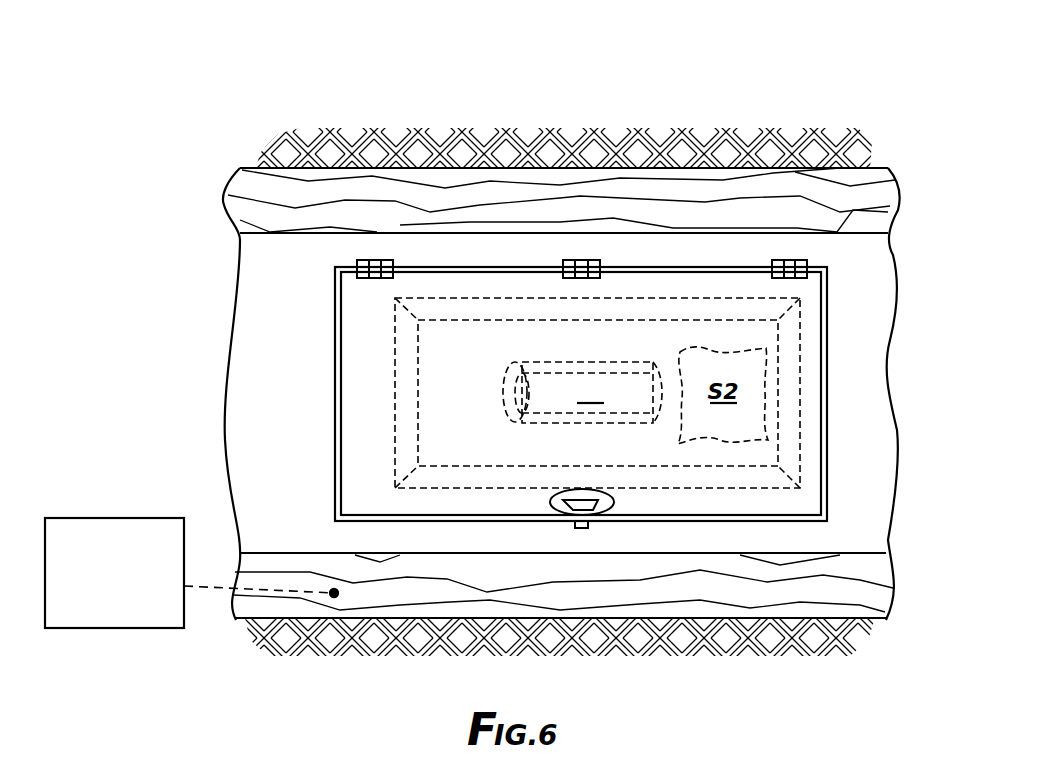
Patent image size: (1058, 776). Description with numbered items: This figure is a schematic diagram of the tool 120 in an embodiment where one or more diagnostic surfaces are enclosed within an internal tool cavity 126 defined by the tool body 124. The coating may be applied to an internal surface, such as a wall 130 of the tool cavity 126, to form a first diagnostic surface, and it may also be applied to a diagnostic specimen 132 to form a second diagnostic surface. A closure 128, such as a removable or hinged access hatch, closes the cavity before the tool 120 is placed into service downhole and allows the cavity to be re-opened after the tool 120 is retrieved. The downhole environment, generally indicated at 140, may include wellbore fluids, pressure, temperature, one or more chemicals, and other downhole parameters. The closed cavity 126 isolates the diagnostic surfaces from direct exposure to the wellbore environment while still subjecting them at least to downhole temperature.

The tool 120 is at (762, 91).
The tool body 124 is at (794, 246).
The internal tool cavity 126 is at (765, 335).
The closure 128 is at (828, 364).
The wall 130 is at (757, 453).
The diagnostic specimen 132 is at (512, 372).
The downhole environment parameters 140 is at (97, 517).